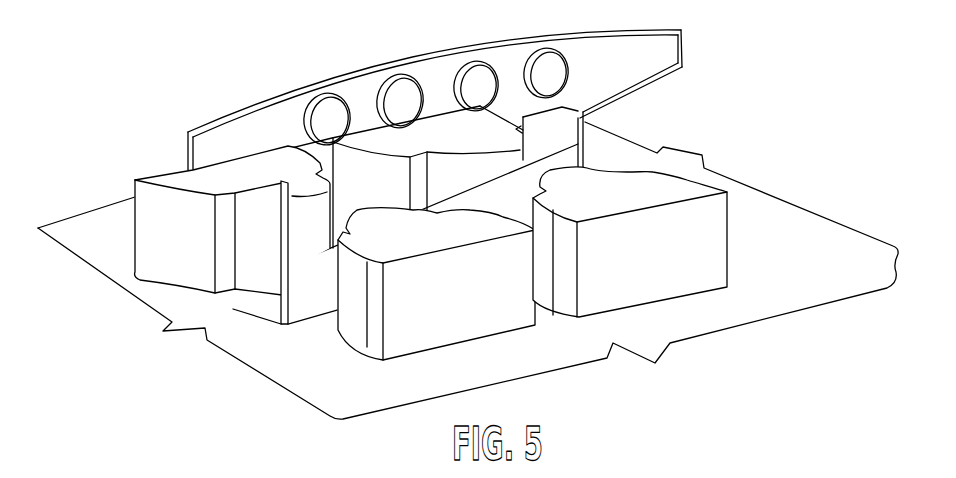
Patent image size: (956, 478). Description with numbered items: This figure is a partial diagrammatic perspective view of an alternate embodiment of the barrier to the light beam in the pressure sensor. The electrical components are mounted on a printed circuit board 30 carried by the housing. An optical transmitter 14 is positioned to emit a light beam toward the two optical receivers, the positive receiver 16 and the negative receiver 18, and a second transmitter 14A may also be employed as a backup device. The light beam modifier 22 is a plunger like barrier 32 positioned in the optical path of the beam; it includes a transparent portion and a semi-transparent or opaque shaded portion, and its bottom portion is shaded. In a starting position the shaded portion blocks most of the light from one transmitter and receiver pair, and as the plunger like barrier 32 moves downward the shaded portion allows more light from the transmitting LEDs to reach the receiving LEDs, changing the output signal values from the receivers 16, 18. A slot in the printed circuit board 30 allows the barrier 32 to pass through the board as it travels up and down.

The optical transmitter 14 is at (155, 203).
The second transmitter 14A is at (391, 90).
The positive receiver 16 is at (670, 193).
The negative receiver 18 is at (432, 330).
The light beam modifier 22 is at (668, 95).
The printed circuit board 30 is at (772, 301).
The plunger like barrier 32 is at (700, 53).